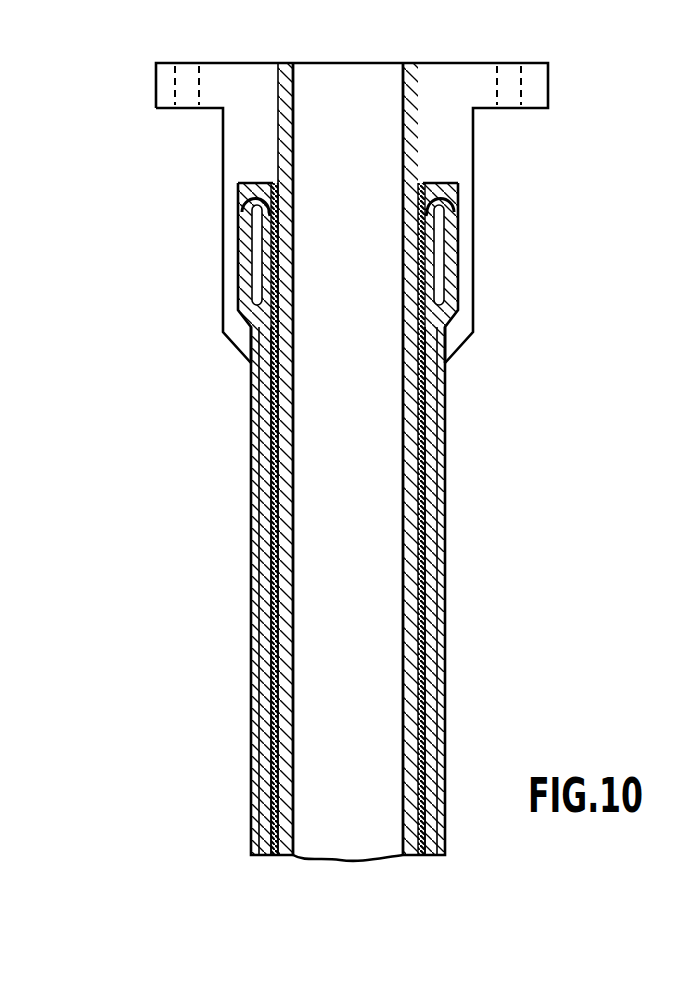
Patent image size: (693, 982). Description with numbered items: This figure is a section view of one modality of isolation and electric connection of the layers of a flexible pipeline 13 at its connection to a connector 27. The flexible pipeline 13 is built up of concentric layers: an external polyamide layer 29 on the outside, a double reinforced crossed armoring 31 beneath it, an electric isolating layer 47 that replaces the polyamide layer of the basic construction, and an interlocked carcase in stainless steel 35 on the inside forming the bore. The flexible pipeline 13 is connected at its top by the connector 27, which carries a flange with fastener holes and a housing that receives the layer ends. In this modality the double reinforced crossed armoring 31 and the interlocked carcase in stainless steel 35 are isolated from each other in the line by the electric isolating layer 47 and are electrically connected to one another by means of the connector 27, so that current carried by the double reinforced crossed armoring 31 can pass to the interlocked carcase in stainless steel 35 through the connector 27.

The flexible pipeline 13 is at (445, 513).
The connector 27 is at (156, 110).
The external polyamide layer 29 is at (251, 484).
The double reinforced crossed armoring 31 is at (258, 588).
The electric isolating layer 47 is at (272, 645).
The interlocked carcase in stainless steel 35 is at (283, 717).